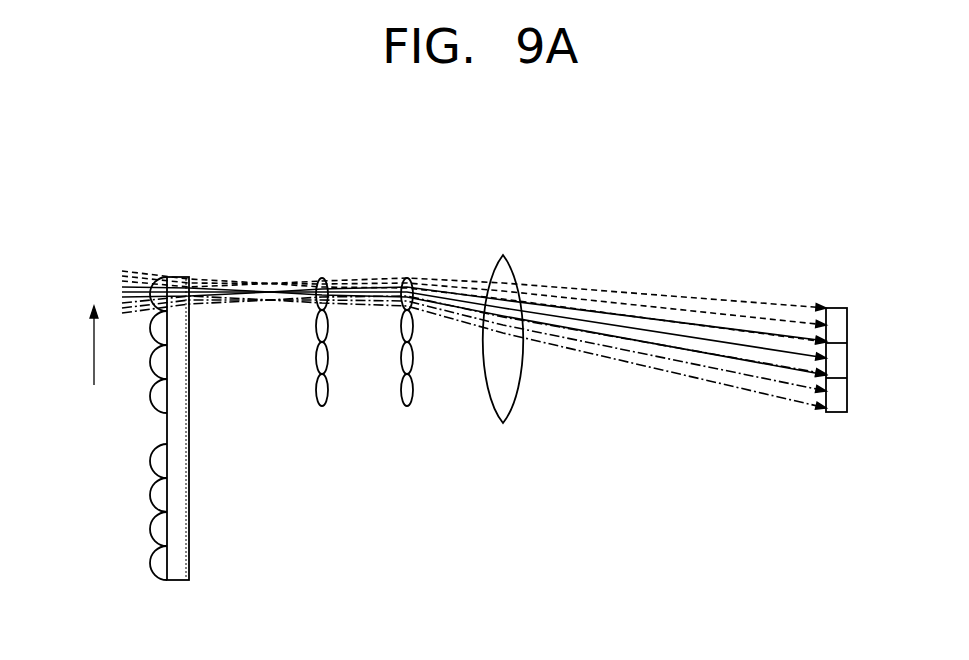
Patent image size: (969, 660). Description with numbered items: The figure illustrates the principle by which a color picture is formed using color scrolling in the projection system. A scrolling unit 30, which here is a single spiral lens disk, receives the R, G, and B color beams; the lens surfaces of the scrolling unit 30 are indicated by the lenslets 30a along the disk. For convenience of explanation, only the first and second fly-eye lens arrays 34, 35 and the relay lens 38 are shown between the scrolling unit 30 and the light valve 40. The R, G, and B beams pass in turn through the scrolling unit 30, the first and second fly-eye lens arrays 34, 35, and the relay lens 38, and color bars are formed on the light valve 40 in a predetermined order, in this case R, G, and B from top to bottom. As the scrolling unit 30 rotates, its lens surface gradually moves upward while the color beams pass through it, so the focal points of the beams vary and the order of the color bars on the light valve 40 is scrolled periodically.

The scrolling unit 30 is at (178, 586).
The lenslets (lens array on panel) 30a is at (151, 531).
The first fly-eye lens array 34 is at (322, 406).
The second fly-eye lens array 35 is at (407, 406).
The relay lens 38 is at (503, 423).
The light valve 40 is at (838, 412).